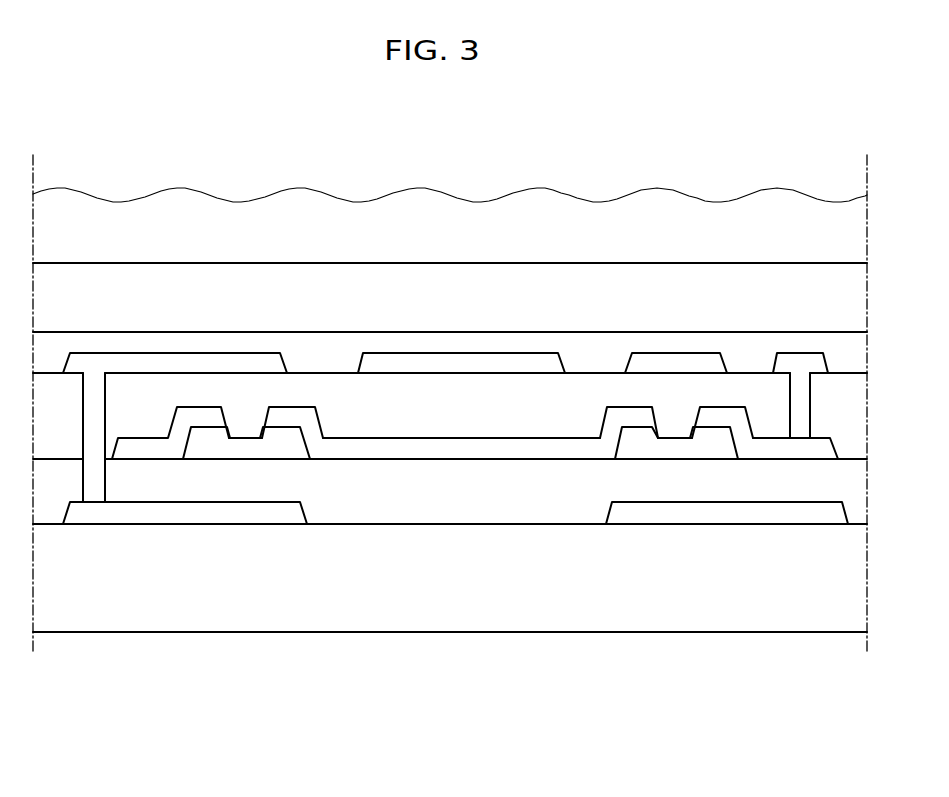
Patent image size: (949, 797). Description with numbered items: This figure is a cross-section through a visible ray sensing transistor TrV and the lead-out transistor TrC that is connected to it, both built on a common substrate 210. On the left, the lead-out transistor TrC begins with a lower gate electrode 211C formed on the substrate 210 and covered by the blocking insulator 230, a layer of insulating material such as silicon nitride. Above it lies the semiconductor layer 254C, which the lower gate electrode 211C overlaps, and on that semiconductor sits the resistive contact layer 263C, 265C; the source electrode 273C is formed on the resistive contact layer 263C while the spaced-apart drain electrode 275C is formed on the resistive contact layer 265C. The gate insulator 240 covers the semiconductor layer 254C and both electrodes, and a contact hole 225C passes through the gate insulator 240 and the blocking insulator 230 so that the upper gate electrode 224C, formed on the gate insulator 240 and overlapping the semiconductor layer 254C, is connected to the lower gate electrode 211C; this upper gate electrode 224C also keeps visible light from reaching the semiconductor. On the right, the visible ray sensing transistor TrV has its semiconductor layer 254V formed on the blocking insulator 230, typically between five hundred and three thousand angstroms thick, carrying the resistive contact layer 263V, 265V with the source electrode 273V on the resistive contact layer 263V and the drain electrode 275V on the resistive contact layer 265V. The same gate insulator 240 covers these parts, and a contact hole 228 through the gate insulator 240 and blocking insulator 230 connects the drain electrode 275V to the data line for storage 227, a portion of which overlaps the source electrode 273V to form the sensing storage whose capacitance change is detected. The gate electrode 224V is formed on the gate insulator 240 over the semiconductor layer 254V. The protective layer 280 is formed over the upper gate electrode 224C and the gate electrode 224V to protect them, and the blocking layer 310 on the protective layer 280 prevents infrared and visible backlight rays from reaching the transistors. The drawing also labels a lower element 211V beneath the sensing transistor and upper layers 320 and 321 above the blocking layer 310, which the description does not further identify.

The substrate 210 is at (450, 423).
The lower gate electrode 211C is at (185, 595).
The light blocking pattern 211V is at (727, 513).
The contact hole 225C is at (74, 551).
The blocking insulator 230 is at (852, 483).
The gate insulator 240 is at (852, 423).
The semiconductor layer 254C is at (246, 582).
The semiconductor layer 254V is at (676, 567).
The resistive contact layer 263C is at (289, 558).
The resistive contact layer 263V is at (625, 561).
The resistive contact layer 265C is at (209, 558).
The resistive contact layer 265V is at (727, 561).
The source electrode 273C is at (170, 295).
The source electrode 273V is at (620, 287).
The drain electrode 275C is at (305, 289).
The drain electrode 275V is at (730, 288).
The upper gate electrode 224C is at (175, 252).
The gate electrode 224V is at (676, 255).
The data line for storage 227 is at (594, 253).
The contact hole 228 is at (813, 403).
The protective layer 280 is at (852, 355).
The blocking layer 310 is at (852, 293).
The encapsulation layer 320 is at (850, 233).
The inorganic encapsulation layer 321 is at (104, 165).
The lead-out transistor TrC is at (160, 716).
The visible ray sensing transistor TrV is at (695, 722).